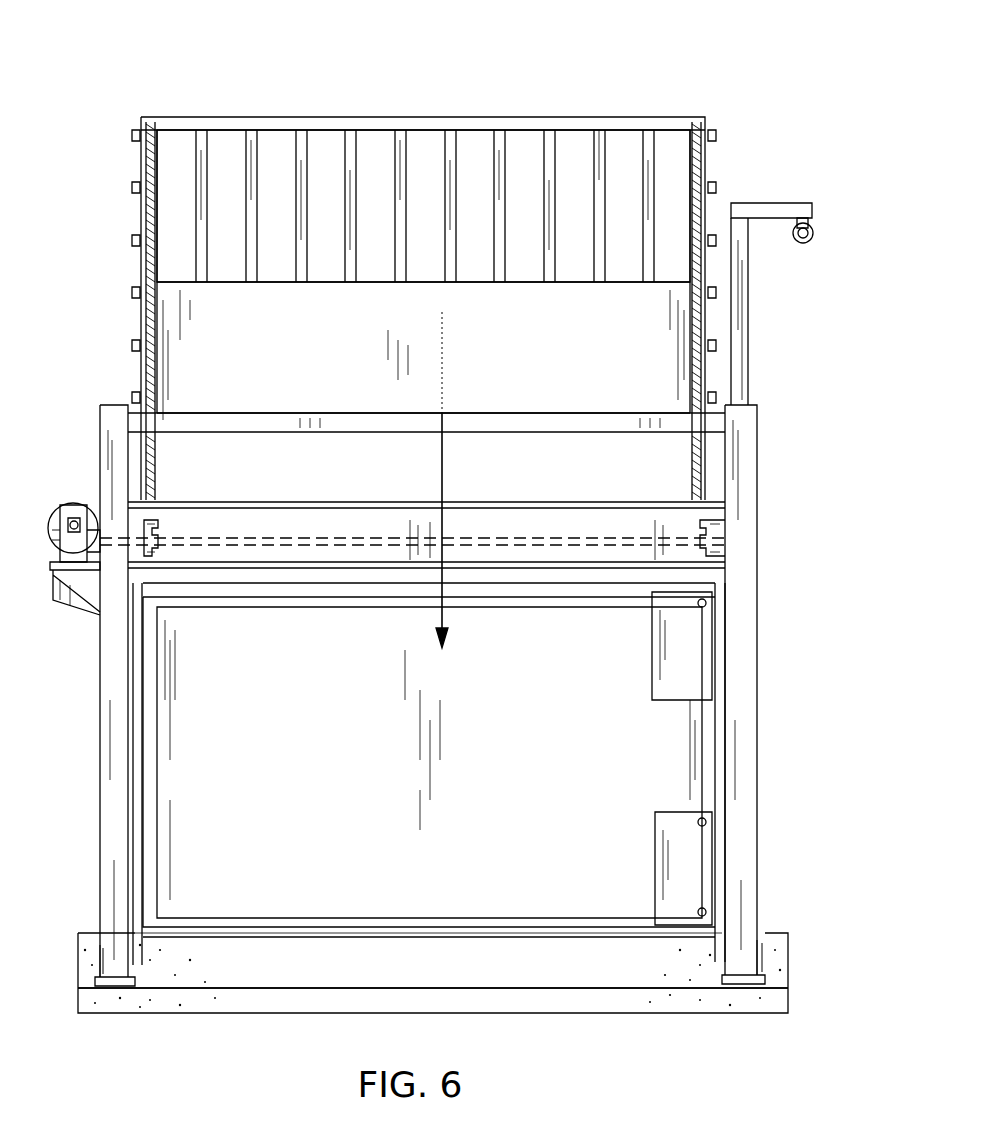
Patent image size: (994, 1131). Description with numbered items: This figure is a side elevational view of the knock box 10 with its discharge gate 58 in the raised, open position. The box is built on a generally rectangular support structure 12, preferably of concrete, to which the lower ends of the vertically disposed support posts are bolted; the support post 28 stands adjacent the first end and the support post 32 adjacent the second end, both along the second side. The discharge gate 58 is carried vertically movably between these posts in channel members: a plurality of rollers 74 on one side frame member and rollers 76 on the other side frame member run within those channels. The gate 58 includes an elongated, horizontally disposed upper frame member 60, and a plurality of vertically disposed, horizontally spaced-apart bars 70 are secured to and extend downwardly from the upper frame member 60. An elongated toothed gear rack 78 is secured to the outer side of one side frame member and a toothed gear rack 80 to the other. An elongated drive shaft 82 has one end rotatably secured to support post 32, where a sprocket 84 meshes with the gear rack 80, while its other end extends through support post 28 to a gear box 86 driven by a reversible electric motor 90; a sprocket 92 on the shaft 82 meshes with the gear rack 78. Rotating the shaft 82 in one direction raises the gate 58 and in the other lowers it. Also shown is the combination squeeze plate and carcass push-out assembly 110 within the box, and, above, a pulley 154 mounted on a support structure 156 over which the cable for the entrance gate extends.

The knock box 10 is at (643, 100).
The support structure 12 is at (792, 918).
The second vertically disposed support post 28 is at (113, 768).
The fourth support post 32 is at (750, 733).
The discharge gate 58 is at (526, 117).
The upper frame member 60 is at (323, 122).
The bars 70 is at (403, 157).
The rollers 74 is at (132, 294).
The rollers 76 is at (718, 187).
The toothed gear rack 78 is at (148, 365).
The toothed gear rack 80 is at (703, 366).
The drive shaft 82 is at (283, 545).
The sprocket 84 is at (705, 530).
The gear box 86 is at (97, 553).
The reversible electric motor 90 is at (76, 503).
The sprocket 92 is at (158, 520).
The combination squeeze plate and carcass push-out assembly 110 is at (628, 692).
The pulley 154 is at (800, 243).
The support structure 156 is at (773, 205).